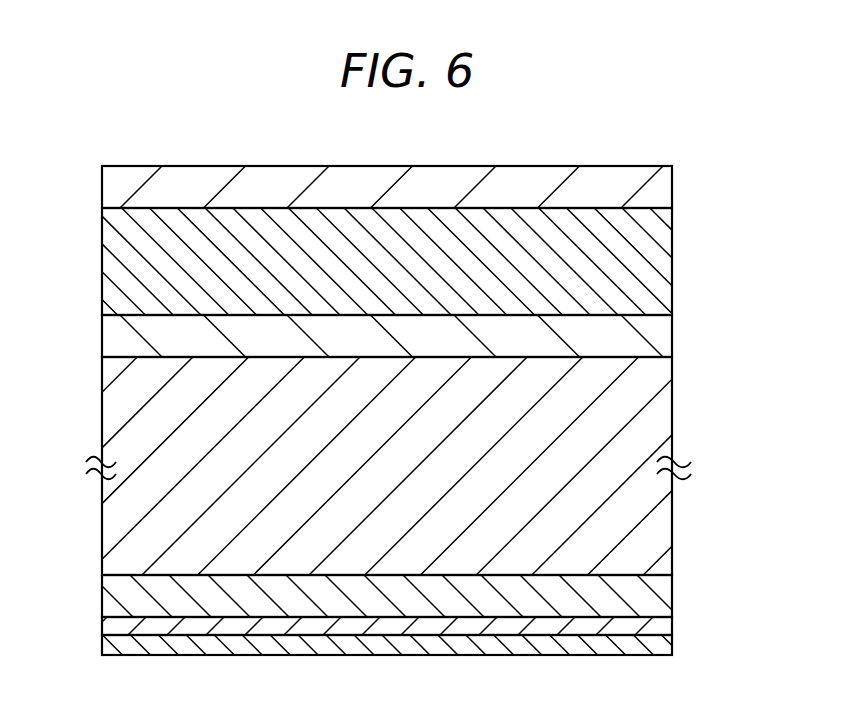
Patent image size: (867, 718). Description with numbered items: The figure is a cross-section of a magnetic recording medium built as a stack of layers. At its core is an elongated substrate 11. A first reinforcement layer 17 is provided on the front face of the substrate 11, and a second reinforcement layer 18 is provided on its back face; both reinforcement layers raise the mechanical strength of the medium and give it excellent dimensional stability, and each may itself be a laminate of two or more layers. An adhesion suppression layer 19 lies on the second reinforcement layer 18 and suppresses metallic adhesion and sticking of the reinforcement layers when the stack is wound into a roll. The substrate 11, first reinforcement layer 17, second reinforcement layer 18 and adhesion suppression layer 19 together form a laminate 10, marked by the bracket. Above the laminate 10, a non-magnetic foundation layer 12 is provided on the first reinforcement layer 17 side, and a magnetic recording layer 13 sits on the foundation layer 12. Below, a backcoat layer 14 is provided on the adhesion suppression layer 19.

The laminate 10 is at (94, 315).
The substrate 11 is at (665, 423).
The foundation layer 12 is at (663, 268).
The recording layer 13 is at (663, 194).
The backcoat layer 14 is at (663, 646).
The first reinforcement layer 17 is at (663, 337).
The second reinforcement layer 18 is at (663, 593).
The adhesion suppression layer 19 is at (663, 628).